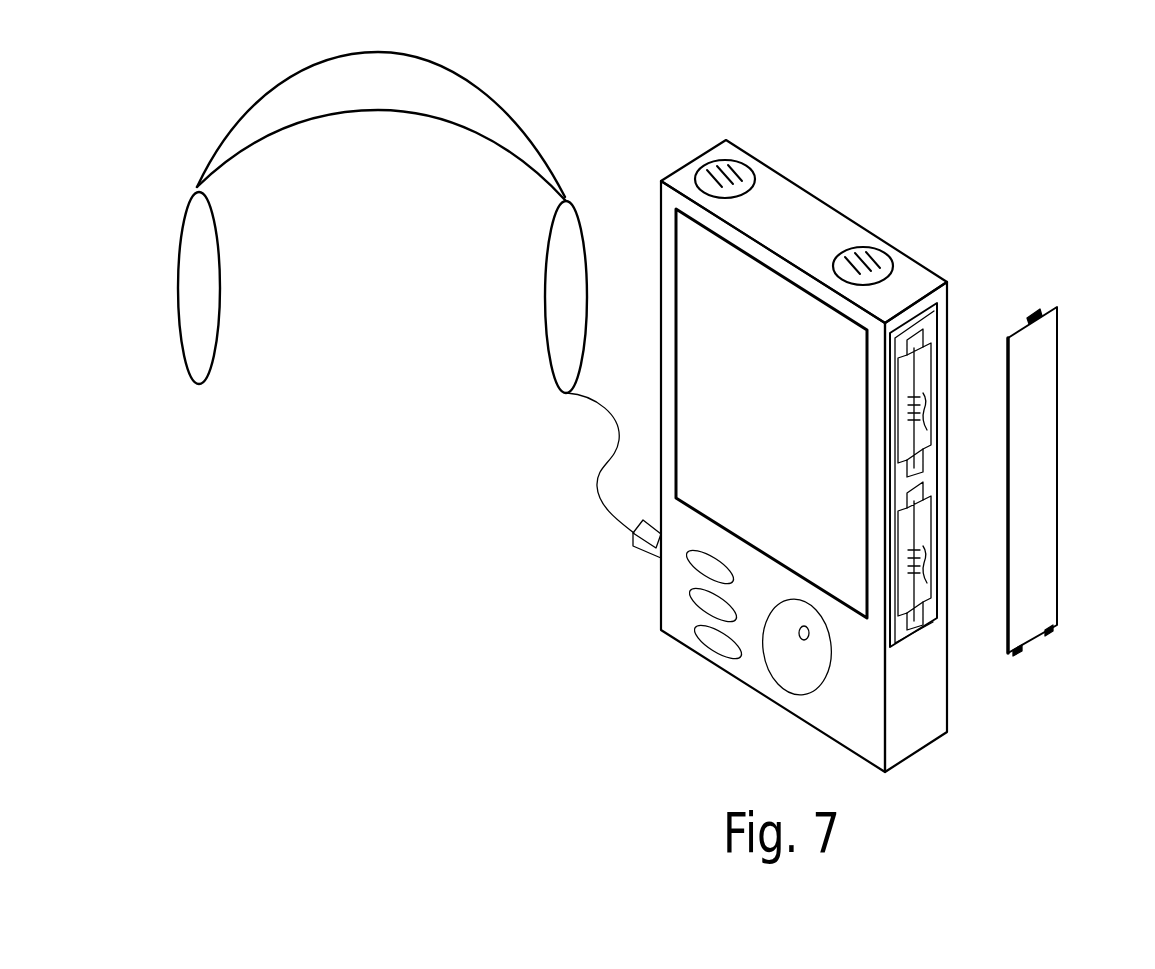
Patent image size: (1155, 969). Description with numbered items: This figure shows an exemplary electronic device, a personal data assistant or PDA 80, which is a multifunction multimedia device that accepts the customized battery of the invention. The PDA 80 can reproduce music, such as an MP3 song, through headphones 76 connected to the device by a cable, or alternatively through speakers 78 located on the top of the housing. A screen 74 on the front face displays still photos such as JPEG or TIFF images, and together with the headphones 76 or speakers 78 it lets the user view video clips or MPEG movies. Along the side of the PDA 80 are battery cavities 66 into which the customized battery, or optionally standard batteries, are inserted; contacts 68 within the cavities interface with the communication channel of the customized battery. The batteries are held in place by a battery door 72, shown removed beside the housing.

The battery cavities 66 is at (923, 368).
The contacts 68 is at (927, 413).
The battery door 72 is at (1050, 427).
The screen 74 is at (687, 313).
The headphones 76 is at (488, 118).
The speakers 78 is at (740, 172).
The personal data assistant (PDA) 80 is at (833, 180).